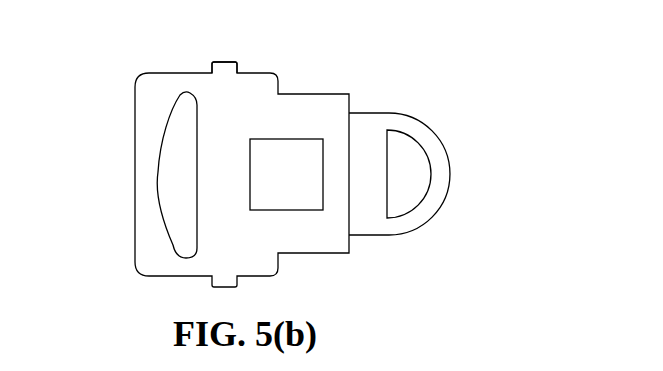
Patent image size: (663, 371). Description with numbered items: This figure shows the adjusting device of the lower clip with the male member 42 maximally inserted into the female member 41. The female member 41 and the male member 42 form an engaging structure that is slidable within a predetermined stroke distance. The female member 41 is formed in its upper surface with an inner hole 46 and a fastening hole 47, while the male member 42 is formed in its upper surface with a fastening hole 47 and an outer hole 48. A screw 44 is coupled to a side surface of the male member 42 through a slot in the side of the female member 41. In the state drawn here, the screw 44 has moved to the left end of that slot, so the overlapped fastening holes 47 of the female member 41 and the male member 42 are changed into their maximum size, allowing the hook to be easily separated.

The female member 41 is at (147, 263).
The male member 42 is at (432, 222).
The screw 44 is at (223, 62).
The inner hole 46 is at (160, 172).
The fastening hole 47 is at (302, 138).
The outer hole 48 is at (423, 148).